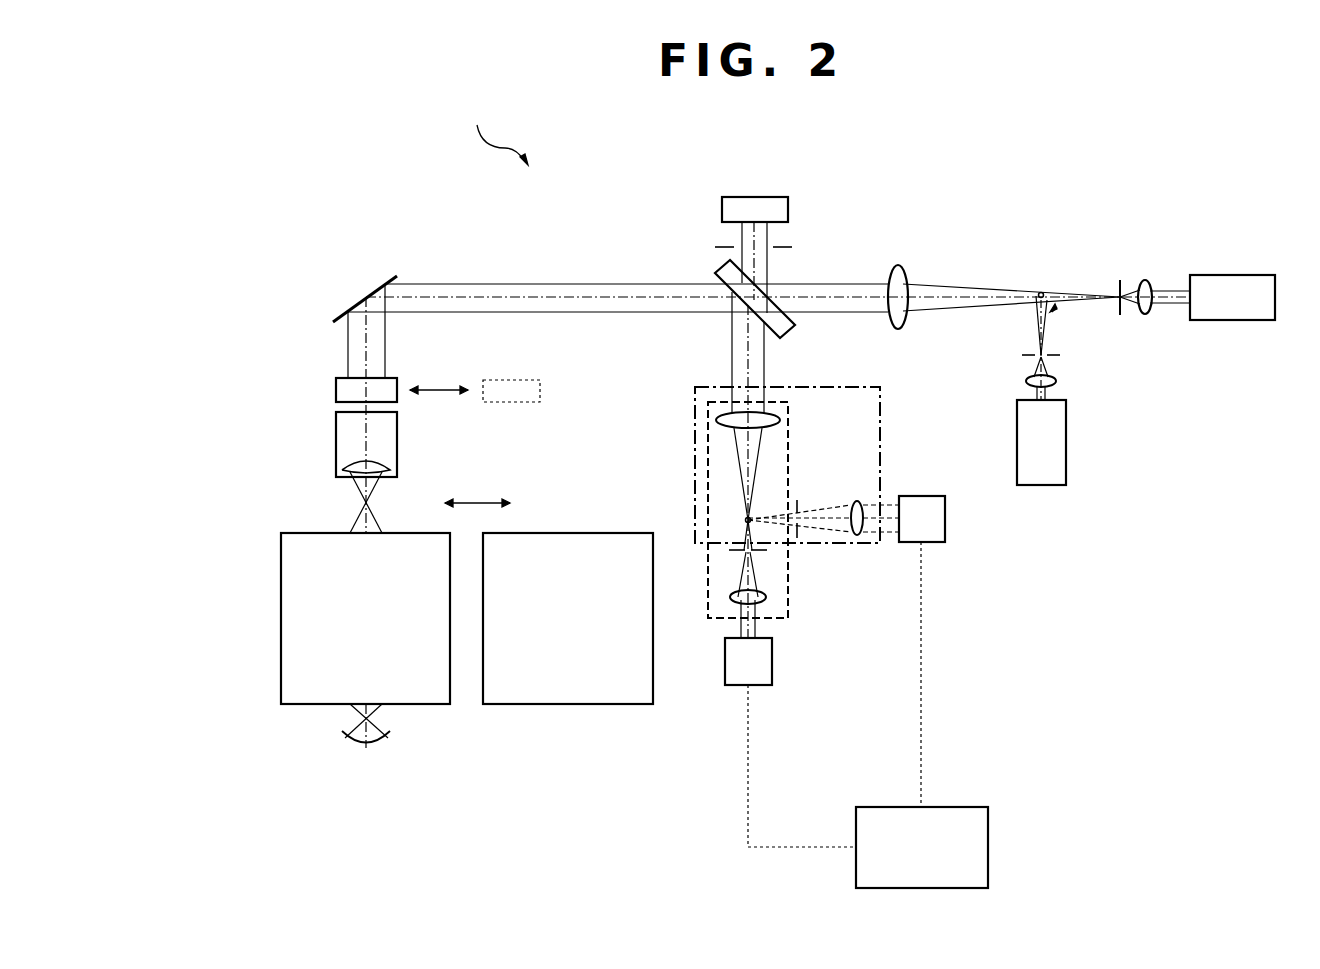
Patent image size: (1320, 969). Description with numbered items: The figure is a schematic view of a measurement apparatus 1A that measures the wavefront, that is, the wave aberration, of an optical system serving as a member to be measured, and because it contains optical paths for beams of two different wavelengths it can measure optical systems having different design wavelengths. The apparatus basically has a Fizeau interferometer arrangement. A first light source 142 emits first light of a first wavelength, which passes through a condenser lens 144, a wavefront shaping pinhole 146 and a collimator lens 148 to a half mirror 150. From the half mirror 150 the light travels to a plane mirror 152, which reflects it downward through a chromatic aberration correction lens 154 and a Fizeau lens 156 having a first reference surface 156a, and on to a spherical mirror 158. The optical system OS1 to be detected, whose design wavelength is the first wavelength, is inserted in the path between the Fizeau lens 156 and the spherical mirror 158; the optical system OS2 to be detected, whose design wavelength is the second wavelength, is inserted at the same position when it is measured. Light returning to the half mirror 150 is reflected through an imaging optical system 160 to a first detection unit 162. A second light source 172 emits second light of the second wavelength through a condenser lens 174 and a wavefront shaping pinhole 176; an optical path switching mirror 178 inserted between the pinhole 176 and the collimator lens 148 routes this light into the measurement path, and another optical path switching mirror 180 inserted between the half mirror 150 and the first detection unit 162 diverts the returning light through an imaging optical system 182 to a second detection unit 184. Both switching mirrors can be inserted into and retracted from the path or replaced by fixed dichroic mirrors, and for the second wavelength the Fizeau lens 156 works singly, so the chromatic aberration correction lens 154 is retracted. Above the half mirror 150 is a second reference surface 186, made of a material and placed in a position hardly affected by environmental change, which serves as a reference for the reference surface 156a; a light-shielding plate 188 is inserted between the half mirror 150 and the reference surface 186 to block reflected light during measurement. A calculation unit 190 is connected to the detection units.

The measurement apparatus 1A is at (500, 119).
The first light source 142 is at (1233, 274).
The condenser lens 144 is at (1145, 279).
The wavefront shaping pinhole 146 is at (1118, 290).
The collimator lens 148 is at (897, 264).
The half mirror 150 is at (797, 330).
The plane mirror 152 is at (392, 270).
The chromatic aberration correction lens 154 is at (336, 390).
The Fizeau lens 156 is at (336, 444).
The reference surface 156a is at (378, 463).
The spherical mirror 158 is at (356, 742).
The imaging optical system 160 is at (790, 586).
The first detection unit 162 is at (773, 662).
The second light source 172 is at (1067, 443).
The condenser lens 174 is at (1058, 380).
The wavefront shaping pinhole 176 is at (1022, 355).
The optical path switching mirror 178 is at (1034, 289).
The optical path switching mirror 180 is at (745, 516).
The imaging optical system 182 is at (694, 395).
The second detection unit 184 is at (946, 516).
The reference surface 186 is at (752, 196).
The light-shielding plate 188 is at (718, 241).
The calculation unit 190 is at (965, 806).
The optical system to be detected OS1 is at (281, 614).
The optical system to be detected OS2 is at (575, 705).